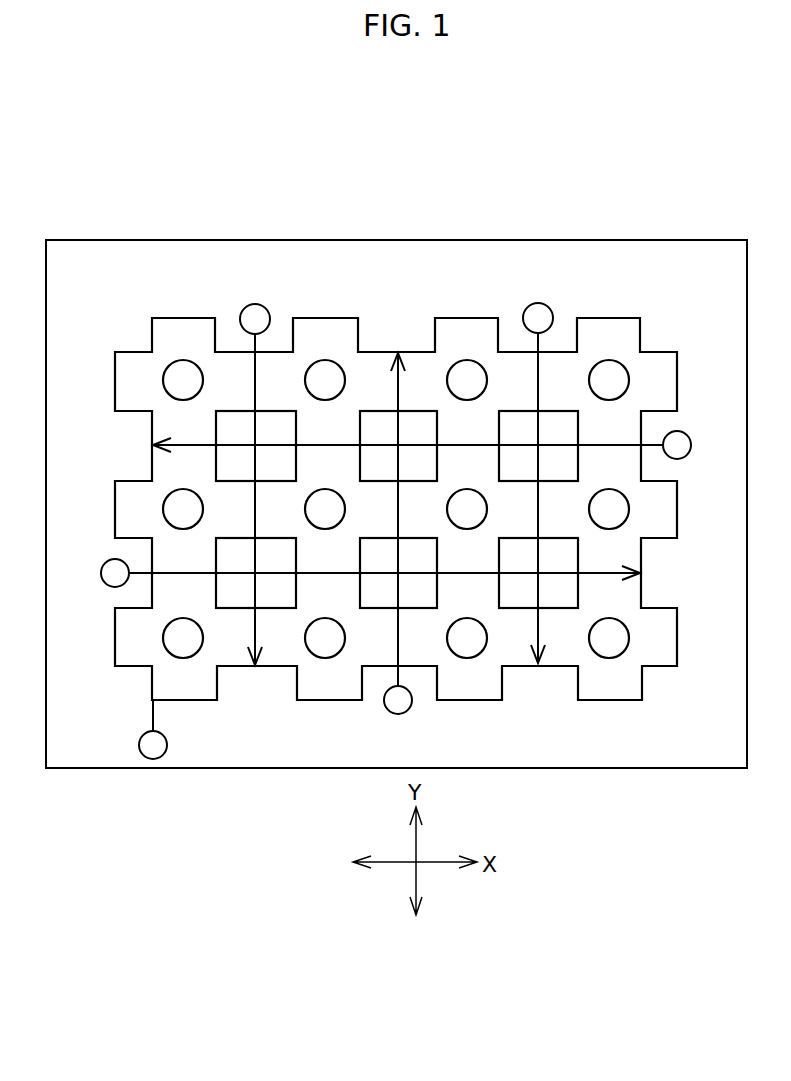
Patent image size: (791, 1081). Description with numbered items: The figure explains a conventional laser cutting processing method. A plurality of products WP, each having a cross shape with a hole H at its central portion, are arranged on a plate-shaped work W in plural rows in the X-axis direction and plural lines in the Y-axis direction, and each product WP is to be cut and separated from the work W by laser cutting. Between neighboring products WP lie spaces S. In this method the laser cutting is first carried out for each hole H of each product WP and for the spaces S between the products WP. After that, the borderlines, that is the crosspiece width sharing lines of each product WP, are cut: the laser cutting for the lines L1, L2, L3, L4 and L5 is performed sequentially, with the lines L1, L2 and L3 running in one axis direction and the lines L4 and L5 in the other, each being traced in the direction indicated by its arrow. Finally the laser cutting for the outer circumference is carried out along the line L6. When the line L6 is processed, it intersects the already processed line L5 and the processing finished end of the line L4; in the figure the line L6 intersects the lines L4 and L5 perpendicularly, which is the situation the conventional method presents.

The work W is at (593, 243).
The product WP is at (612, 330).
The space S is at (514, 418).
The hole H is at (612, 370).
The line L1 is at (535, 345).
The line L2 is at (398, 655).
The line L3 is at (252, 345).
The line L4 is at (658, 455).
The line L5 is at (140, 578).
The line L6 is at (155, 715).